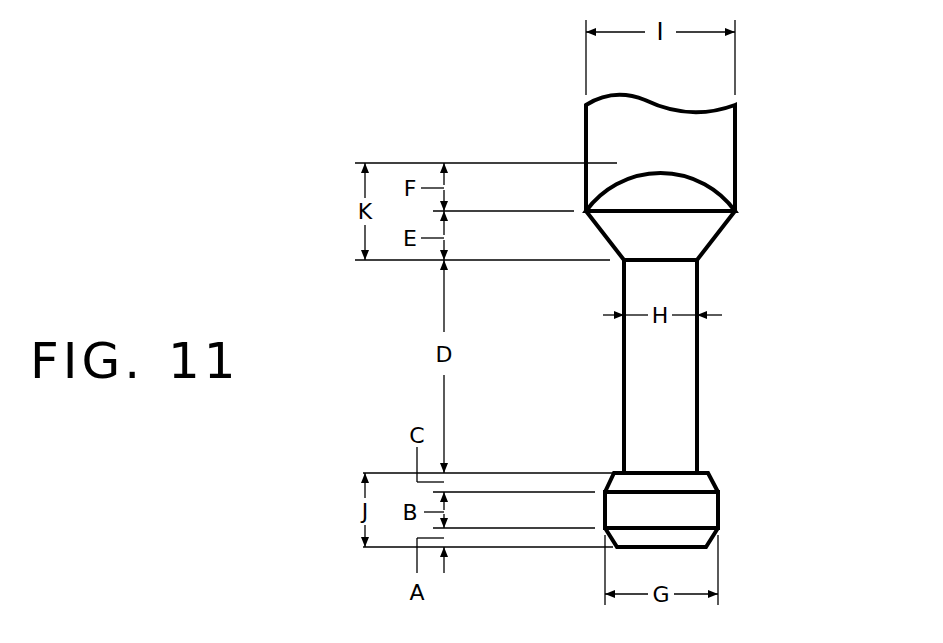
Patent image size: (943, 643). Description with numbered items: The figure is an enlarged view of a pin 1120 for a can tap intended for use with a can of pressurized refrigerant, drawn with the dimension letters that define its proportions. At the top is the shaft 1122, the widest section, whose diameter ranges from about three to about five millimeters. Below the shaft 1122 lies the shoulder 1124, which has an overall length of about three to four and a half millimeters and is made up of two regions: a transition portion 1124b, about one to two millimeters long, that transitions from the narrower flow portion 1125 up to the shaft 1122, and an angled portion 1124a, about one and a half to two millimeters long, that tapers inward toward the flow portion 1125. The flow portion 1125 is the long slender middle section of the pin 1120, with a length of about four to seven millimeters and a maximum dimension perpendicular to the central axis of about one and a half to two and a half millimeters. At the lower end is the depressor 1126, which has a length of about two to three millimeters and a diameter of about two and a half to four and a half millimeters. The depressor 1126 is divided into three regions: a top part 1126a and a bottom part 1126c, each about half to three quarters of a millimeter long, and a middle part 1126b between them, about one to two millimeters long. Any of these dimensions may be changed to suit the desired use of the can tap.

The pin 1120 is at (519, 88).
The shaft 1122 is at (735, 150).
The shoulder 1124 is at (843, 178).
The angled portion 1124a is at (710, 238).
The transition portion 1124b is at (722, 193).
The flow portion 1125 is at (697, 356).
The depressor 1126 is at (755, 586).
The top part 1126a is at (706, 482).
The middle part 1126b is at (718, 510).
The bottom part 1126c is at (708, 540).